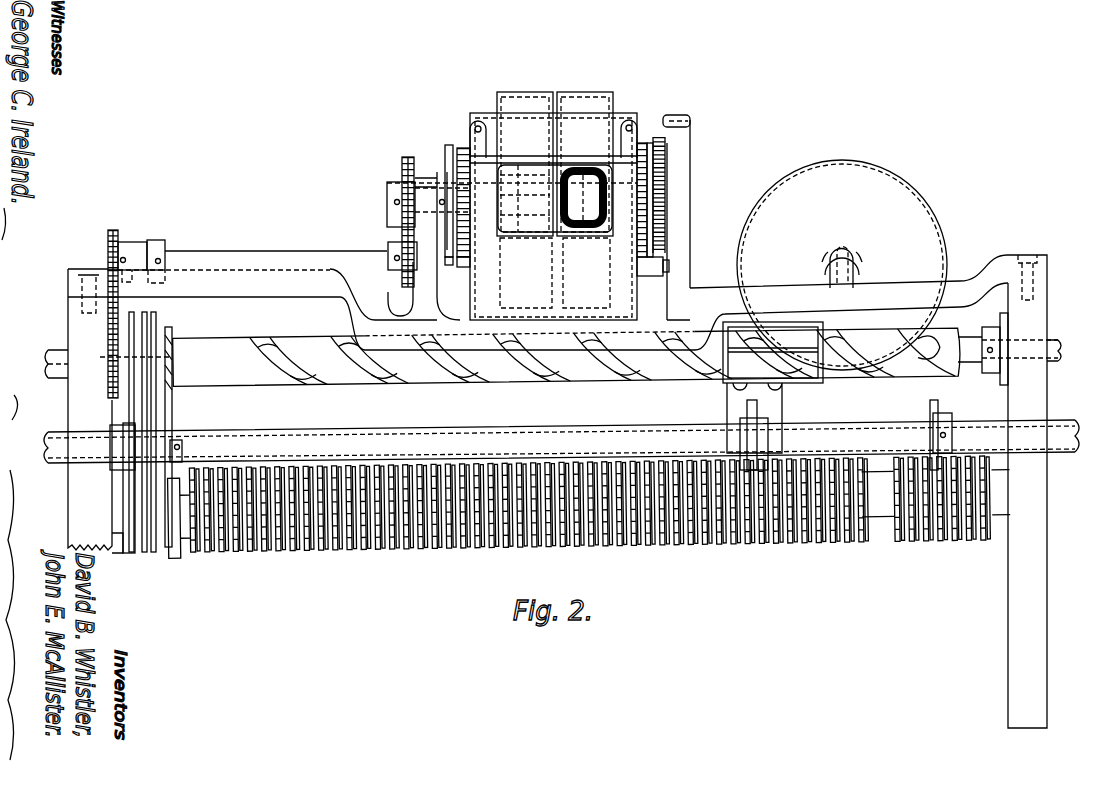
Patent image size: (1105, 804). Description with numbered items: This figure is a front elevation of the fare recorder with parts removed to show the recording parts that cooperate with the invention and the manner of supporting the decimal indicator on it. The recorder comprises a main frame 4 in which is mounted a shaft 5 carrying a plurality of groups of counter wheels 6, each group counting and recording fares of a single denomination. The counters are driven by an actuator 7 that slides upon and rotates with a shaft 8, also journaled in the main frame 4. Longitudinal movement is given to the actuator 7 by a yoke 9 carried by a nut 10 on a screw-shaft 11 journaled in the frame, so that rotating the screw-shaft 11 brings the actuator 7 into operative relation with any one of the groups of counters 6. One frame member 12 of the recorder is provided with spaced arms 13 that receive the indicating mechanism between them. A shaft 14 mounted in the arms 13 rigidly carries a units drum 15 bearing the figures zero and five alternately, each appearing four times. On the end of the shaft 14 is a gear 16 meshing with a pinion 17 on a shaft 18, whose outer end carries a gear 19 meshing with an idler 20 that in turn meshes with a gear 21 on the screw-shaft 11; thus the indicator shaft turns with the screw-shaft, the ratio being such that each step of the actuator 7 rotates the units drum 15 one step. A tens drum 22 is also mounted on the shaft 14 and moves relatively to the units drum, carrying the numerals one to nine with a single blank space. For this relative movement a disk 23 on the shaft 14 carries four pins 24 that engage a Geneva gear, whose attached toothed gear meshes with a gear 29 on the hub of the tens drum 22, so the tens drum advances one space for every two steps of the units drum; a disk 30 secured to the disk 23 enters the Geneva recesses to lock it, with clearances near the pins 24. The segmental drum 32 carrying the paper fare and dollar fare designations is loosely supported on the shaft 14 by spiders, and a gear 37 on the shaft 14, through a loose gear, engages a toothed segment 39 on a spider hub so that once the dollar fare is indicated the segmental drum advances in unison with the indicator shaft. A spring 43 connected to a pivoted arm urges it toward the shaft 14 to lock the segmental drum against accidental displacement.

The main frame 4 is at (107, 542).
The shaft 5 is at (887, 512).
The counter wheels 6 is at (435, 548).
The actuator 7 is at (752, 433).
The shaft 8 is at (530, 440).
The yoke 9 is at (747, 391).
The nut 10 is at (733, 343).
The screw-shaft 11 is at (503, 378).
The frame member 12 is at (300, 268).
The arms 13 is at (422, 185).
The shaft 14 is at (424, 182).
The units drum 15 is at (575, 97).
The gear 16 is at (402, 163).
The pinion 17 is at (412, 266).
The shaft 18 is at (233, 251).
The gear 19 is at (116, 231).
The idler 20 is at (120, 302).
The gear 21 is at (108, 377).
The tens drum 22 is at (517, 97).
The disk 23 is at (449, 145).
The pins 24 is at (460, 148).
The gear 29 is at (467, 268).
The disk 30 is at (458, 258).
The segmental drum 32 is at (587, 160).
The gear 37 is at (647, 143).
The toothed segment 39 is at (640, 143).
The spring 43 is at (672, 118).